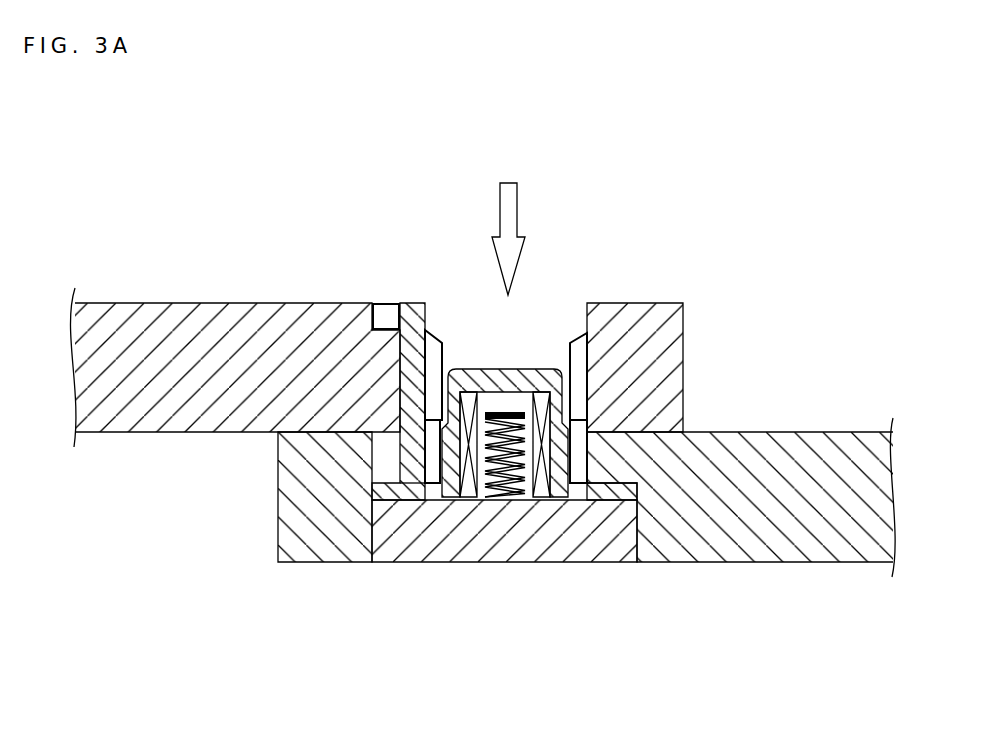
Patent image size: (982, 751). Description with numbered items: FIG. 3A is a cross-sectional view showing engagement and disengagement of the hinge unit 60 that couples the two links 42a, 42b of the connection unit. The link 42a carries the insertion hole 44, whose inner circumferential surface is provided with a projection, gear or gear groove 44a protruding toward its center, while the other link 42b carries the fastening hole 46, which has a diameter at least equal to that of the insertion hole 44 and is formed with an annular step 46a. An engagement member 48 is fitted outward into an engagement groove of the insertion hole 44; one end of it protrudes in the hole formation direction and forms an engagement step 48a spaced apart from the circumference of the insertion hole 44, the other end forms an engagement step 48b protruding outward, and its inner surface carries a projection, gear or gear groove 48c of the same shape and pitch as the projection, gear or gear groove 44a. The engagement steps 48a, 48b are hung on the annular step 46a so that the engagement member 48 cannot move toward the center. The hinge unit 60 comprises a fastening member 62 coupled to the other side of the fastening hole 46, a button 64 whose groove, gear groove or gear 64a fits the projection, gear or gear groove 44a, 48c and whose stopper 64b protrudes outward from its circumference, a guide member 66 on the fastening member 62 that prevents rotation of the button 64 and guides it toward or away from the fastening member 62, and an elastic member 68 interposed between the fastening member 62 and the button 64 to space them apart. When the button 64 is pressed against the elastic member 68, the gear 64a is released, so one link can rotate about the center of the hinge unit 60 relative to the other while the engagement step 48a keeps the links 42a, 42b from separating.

The link 42a is at (124, 328).
The link 42b is at (870, 541).
The insertion hole 44 is at (587, 320).
The projection, gear or gear groove 44a is at (580, 378).
The fastening hole 46 is at (636, 494).
The annular step 46a is at (603, 462).
The engagement member 48 is at (257, 168).
The engagement step 48a is at (395, 490).
The engagement step 48b is at (395, 316).
The projection, gear or gear groove 48c is at (512, 378).
The hinge unit 60 is at (630, 675).
The fastening member 62 is at (616, 546).
The button 64 is at (435, 368).
The groove, gear groove or gear 64a is at (430, 472).
The stopper 64b is at (581, 477).
The guide member 66 is at (542, 405).
The elastic member 68 is at (503, 500).